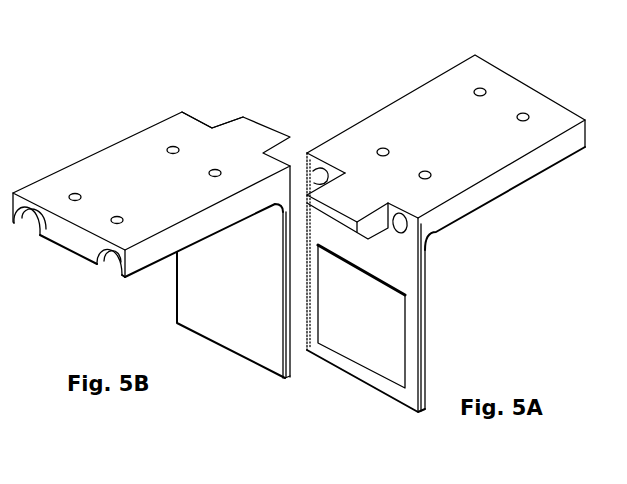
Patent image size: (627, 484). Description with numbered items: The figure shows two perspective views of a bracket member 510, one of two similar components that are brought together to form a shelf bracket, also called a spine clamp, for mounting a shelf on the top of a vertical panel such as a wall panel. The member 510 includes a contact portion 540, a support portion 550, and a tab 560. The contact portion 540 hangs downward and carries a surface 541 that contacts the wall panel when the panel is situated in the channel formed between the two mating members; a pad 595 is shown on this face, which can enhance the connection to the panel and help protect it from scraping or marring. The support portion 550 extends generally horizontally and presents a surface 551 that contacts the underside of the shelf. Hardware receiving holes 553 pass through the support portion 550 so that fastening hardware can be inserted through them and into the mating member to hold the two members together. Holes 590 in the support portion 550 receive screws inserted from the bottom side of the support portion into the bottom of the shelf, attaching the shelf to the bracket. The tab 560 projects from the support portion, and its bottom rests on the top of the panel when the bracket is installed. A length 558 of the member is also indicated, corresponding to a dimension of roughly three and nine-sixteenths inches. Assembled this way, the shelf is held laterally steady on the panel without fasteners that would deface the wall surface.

In FIG. 5B, the bracket member 510 is at (151, 219).
In FIG. 5A, the bracket member 510 is at (435, 247).
In FIG. 5B, the contact portion 540 is at (204, 272).
In FIG. 5A, the contact portion 540 is at (367, 296).
In FIG. 5B, the surface 541 is at (221, 296).
In FIG. 5B, the support portion 550 is at (151, 168).
In FIG. 5A, the support portion 550 is at (463, 177).
In FIG. 5B, the surface 551 is at (134, 201).
In FIG. 5A, the surface 551 is at (425, 150).
In FIG. 5B, the hardware receiving holes 553 is at (25, 210).
In FIG. 5A, the hardware receiving holes 553 is at (400, 234).
In FIG. 5B, the length 558 is at (0, 298).
In FIG. 5B, the tab 560 is at (242, 123).
In FIG. 5A, the tab 560 is at (343, 192).
In FIG. 5B, the holes 590 is at (172, 147).
In FIG. 5A, the holes 590 is at (526, 121).
In FIG. 5A, the pads 595 is at (360, 322).